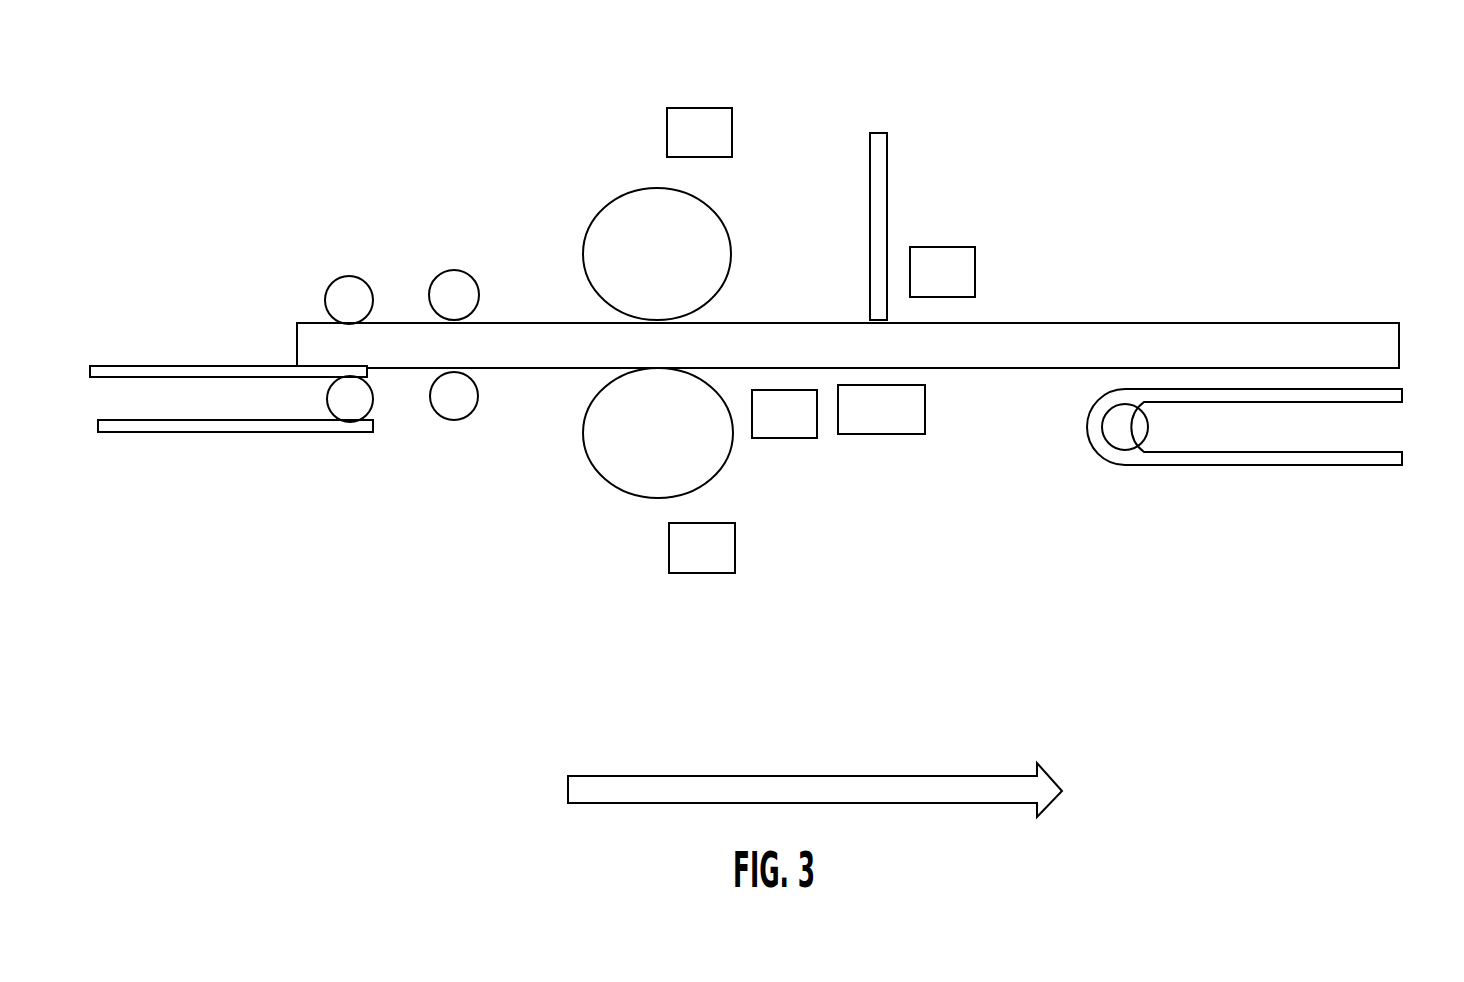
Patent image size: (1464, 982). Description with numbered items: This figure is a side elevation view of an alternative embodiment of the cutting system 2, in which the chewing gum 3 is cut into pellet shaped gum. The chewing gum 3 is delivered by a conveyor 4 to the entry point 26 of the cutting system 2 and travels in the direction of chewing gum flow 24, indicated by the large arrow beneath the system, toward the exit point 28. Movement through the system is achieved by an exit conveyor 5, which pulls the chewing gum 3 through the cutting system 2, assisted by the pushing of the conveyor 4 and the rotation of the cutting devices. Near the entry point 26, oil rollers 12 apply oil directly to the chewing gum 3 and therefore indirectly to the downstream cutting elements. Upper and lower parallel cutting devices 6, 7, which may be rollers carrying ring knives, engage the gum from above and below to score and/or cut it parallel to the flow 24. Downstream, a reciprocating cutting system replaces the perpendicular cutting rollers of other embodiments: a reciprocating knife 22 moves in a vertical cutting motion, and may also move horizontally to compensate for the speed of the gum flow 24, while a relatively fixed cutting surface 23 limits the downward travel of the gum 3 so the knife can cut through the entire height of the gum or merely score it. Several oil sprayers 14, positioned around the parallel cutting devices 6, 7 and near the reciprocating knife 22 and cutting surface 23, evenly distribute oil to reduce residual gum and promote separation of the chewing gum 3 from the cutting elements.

The cutting system 2 is at (1247, 64).
The chewing gum 3 is at (1131, 320).
The conveyor 4 is at (148, 390).
The exit conveyor 5 is at (1128, 467).
The upper parallel cutting device 6 is at (641, 190).
The lower parallel cutting device 7 is at (652, 504).
The oil roller 12 is at (430, 284).
The oil sprayers 14 is at (710, 122).
The reciprocating knife 22 is at (889, 132).
The cutting surface 23 is at (928, 437).
The direction of chewing gum flow 24 is at (566, 790).
The entry point 26 is at (294, 321).
The exit point 28 is at (1403, 350).